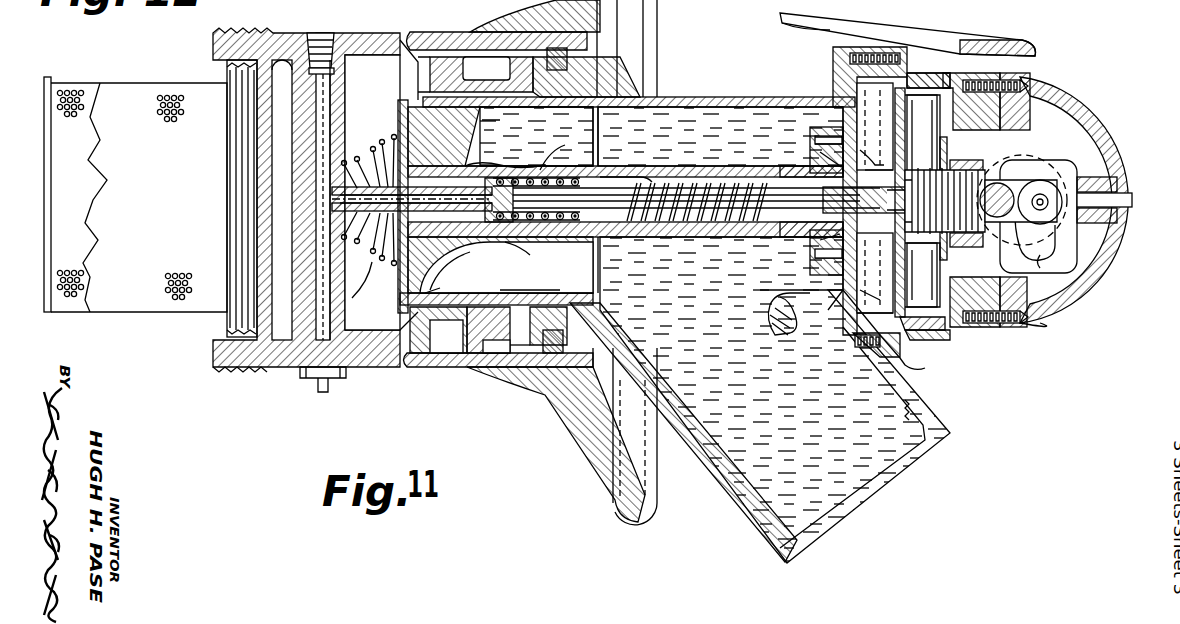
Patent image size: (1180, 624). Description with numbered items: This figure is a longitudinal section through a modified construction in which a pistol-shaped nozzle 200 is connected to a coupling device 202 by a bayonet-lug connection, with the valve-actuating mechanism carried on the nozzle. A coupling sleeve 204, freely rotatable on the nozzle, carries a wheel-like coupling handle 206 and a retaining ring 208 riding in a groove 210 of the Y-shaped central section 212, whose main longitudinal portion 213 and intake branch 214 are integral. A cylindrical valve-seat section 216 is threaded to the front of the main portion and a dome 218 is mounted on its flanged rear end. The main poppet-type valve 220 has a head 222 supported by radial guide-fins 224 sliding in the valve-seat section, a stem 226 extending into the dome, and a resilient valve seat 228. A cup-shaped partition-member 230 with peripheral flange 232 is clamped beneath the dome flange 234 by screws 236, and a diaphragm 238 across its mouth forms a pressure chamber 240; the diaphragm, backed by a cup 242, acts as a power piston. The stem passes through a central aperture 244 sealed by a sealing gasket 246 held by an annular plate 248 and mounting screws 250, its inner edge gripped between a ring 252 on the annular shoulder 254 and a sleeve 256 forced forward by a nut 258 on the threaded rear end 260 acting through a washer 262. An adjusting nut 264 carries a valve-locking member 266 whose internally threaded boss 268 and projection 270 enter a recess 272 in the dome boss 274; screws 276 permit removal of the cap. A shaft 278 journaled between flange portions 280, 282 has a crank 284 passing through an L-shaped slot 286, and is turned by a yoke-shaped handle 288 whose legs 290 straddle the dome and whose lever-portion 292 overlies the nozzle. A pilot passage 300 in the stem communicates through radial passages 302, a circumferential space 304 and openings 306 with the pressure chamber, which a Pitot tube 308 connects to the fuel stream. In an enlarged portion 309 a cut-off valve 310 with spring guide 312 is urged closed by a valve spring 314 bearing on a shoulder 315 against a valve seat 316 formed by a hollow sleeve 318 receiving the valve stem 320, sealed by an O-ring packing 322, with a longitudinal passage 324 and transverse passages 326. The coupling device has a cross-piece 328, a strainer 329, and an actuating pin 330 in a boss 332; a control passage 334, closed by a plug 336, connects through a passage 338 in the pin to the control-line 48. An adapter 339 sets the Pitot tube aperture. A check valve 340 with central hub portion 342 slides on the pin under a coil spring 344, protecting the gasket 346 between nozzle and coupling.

The control-line 48 is at (330, 391).
The nozzle 200 is at (721, 91).
The coupling device 202 is at (366, 34).
The coupling sleeve 204 is at (502, 30).
The coupling handle 206 is at (580, 432).
The retaining ring 208 is at (516, 378).
The groove 210 is at (565, 293).
The central section 212 is at (626, 308).
The main longitudinal portion 213 is at (688, 146).
The intake branch 214 is at (778, 433).
The valve-seat section 216 is at (510, 291).
The dome 218 is at (976, 335).
The main poppet-type valve 220 is at (519, 246).
The valve head 222 is at (473, 270).
The guide-fins 224 is at (494, 122).
The stem 226 is at (694, 238).
The valve seat 228 is at (436, 290).
The partition-member 230 is at (826, 127).
The peripheral flange 232 is at (880, 366).
The peripheral flange 234 is at (906, 358).
The screws 236 is at (901, 62).
The diaphragm 238 is at (926, 330).
The pressure chamber 240 is at (885, 136).
The cup 242 is at (926, 297).
The central aperture 244 is at (812, 238).
The sealing gasket 246 is at (822, 160).
The annular plate 248 is at (815, 250).
The mounting screws 250 is at (815, 136).
The ring 252 is at (802, 184).
The annular shoulder 254 is at (802, 225).
The sleeve 256 is at (881, 166).
The nut 258 is at (923, 170).
The threaded rear end 260 is at (923, 269).
The washer 262 is at (885, 293).
The adjusting nut 264 is at (947, 165).
The valve-locking member 266 is at (1046, 172).
The internally threaded boss 268 is at (950, 252).
The projection 270 is at (1116, 224).
The recess 272 is at (1130, 190).
The boss 274 is at (1096, 184).
The screws 276 is at (1025, 86).
The shaft 278 is at (1000, 175).
The flange portion 280 is at (955, 108).
The flange portion 282 is at (1015, 121).
The crank 284 is at (1005, 216).
The L-shaped slot 286 is at (1047, 253).
The yoke-shaped handle 288 is at (1000, 40).
The legs 290 is at (1035, 75).
The lever-portion 292 is at (868, 20).
The pilot passage 300 is at (645, 238).
The radial passages 302 is at (872, 197).
The circumferential space 304 is at (870, 212).
The openings 306 is at (876, 273).
The Pitot tube 308 is at (762, 300).
The enlarged portion 309 is at (512, 264).
The cut-off valve 310 is at (598, 148).
The spring guide 312 is at (614, 174).
The valve spring 314 is at (606, 242).
The shoulder 315 is at (736, 172).
The valve seat 316 is at (470, 246).
The hollow sleeve 318 is at (480, 152).
The stem 320 is at (495, 172).
The O-ring packing 322 is at (466, 160).
The longitudinal passage 324 is at (408, 314).
The transverse passages 326 is at (545, 166).
The cross-piece 328 is at (303, 148).
The strainer 329 is at (135, 83).
The actuating pin 330 is at (368, 162).
The boss 332 is at (375, 240).
The control passage 334 is at (316, 262).
The plug 336 is at (324, 33).
The passage 338 is at (332, 199).
The adapter 339 is at (772, 336).
The check valve 340 is at (392, 110).
The central hub portion 342 is at (398, 150).
The coil spring 344 is at (386, 284).
The gasket 346 is at (470, 84).